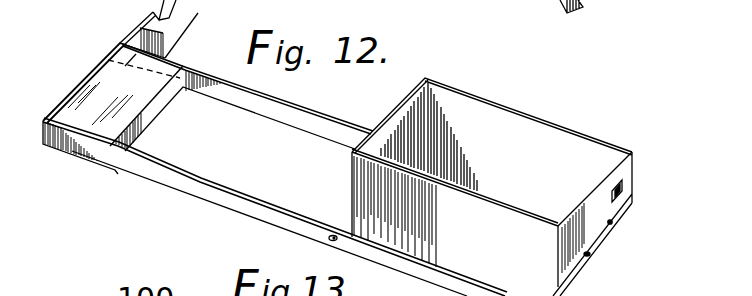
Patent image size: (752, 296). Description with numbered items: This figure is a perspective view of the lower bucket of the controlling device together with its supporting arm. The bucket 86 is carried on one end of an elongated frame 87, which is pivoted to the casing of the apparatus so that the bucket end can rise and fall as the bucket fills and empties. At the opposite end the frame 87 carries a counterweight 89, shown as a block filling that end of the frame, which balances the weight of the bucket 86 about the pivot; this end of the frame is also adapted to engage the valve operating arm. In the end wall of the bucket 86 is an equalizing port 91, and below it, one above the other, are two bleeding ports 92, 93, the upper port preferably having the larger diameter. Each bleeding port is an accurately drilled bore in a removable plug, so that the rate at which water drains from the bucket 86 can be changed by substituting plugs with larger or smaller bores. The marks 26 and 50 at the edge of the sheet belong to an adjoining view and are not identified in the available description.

The bucket 86 is at (544, 169).
The frame 87 is at (187, 187).
The counterweight 89 is at (122, 117).
The equalizing port 91 is at (618, 190).
The bleeding port 92 is at (612, 221).
The bleeding port 93 is at (590, 256).
The member 26 is at (538, 0).
The member 50 is at (606, 0).